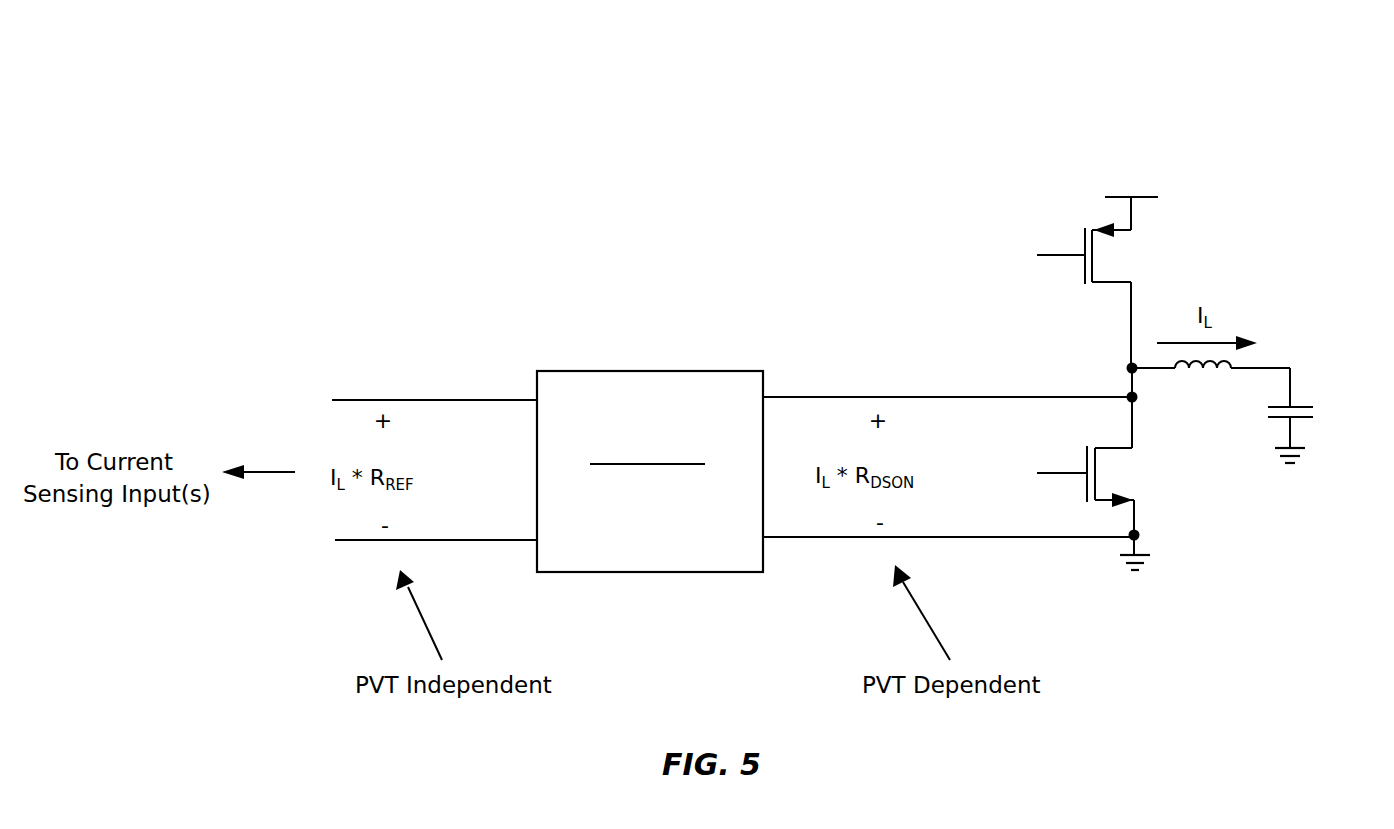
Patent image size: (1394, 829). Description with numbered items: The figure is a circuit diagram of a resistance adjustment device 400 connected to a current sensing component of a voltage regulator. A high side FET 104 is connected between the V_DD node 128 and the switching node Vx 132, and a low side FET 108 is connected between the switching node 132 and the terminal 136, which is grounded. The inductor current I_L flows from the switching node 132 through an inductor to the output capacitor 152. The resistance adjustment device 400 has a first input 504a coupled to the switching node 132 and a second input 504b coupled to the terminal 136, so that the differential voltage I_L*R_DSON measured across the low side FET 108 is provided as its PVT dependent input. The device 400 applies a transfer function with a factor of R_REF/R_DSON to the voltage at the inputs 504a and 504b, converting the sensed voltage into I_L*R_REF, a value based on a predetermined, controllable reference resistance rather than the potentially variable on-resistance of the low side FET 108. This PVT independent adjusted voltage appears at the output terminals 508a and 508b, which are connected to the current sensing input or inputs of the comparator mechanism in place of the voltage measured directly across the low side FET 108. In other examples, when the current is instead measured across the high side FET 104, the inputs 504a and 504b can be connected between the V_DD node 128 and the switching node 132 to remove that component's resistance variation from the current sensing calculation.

The resistance adjustment device 400 is at (646, 371).
The output terminal 508a is at (537, 398).
The output terminal 508b is at (537, 541).
The first input 504a is at (765, 397).
The second input 504b is at (765, 539).
The V_DD node 128 is at (1117, 197).
The high side FET 104 is at (1150, 242).
The switching node Vx 132 is at (1127, 365).
The low side FET 108 is at (1153, 435).
The terminal 136 is at (1140, 532).
The output capacitor 152 is at (1305, 419).